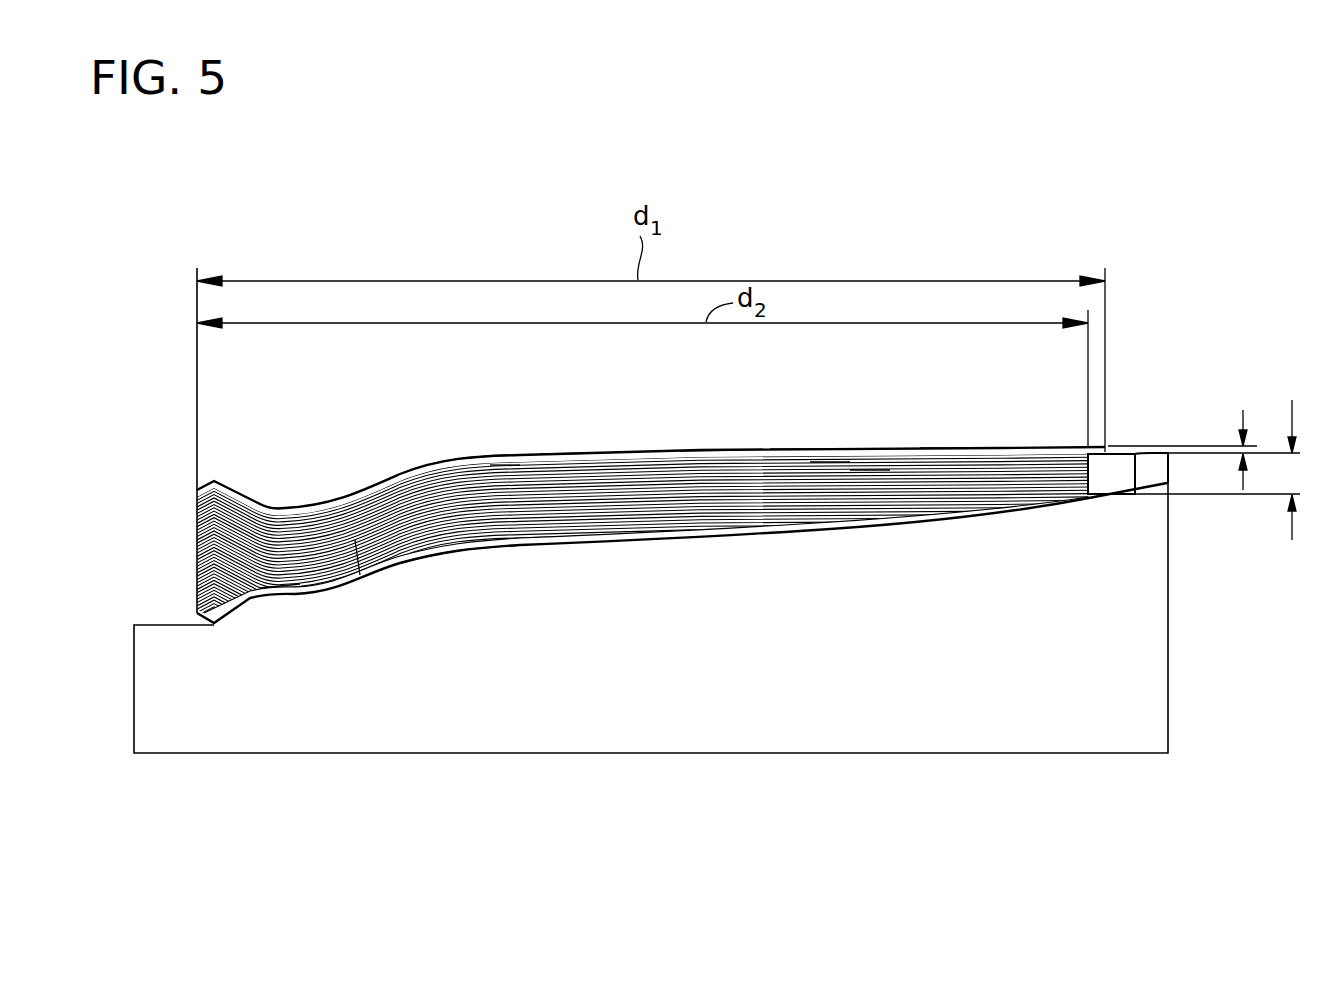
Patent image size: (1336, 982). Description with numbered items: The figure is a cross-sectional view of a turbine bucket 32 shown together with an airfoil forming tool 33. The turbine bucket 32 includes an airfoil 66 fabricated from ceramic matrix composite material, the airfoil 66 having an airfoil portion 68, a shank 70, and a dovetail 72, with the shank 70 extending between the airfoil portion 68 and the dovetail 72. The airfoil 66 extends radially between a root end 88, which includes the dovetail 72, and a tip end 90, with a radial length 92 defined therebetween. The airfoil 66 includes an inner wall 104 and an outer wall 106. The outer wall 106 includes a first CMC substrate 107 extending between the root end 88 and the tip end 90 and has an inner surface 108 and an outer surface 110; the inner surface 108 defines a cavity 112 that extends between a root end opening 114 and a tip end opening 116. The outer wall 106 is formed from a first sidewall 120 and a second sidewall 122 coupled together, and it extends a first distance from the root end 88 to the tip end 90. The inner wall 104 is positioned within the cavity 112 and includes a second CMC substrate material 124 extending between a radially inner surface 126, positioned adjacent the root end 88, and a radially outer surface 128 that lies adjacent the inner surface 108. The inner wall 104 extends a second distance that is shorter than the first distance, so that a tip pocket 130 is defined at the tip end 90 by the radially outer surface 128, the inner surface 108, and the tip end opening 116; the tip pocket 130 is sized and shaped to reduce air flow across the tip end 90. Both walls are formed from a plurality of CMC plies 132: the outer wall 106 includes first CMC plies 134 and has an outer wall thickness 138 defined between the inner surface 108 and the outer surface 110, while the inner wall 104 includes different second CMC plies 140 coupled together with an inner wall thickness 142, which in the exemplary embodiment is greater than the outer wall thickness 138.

The turbine bucket 32 is at (953, 224).
The airfoil forming tool 33 is at (152, 689).
The airfoil 66 is at (833, 174).
The airfoil portion 68 is at (703, 452).
The shank 70 is at (320, 495).
The dovetail 72 is at (234, 490).
The root end 88 is at (172, 488).
The tip end 90 is at (1078, 440).
The radial length 92 is at (436, 280).
The inner wall 104 is at (872, 470).
The outer wall 106 is at (944, 448).
The first CMC substrate 107 is at (566, 452).
The inner surface 108 is at (832, 460).
The outer surface 110 is at (792, 453).
The cavity 112 is at (506, 470).
The root end opening 114 is at (160, 591).
The tip end opening 116 is at (1182, 477).
The first sidewall 120 is at (462, 549).
The second sidewall 122 is at (441, 455).
The second CMC substrate material 124 is at (808, 505).
The radially inner surface 126 is at (200, 548).
The radially outer surface 128 is at (1106, 498).
The tip pocket 130 is at (1124, 440).
The CMC plies 132 is at (357, 537).
The first CMC plies 134 is at (279, 506).
The outer wall thickness 138 is at (1243, 410).
The second CMC plies 140 is at (272, 582).
The inner wall thickness 142 is at (1292, 540).